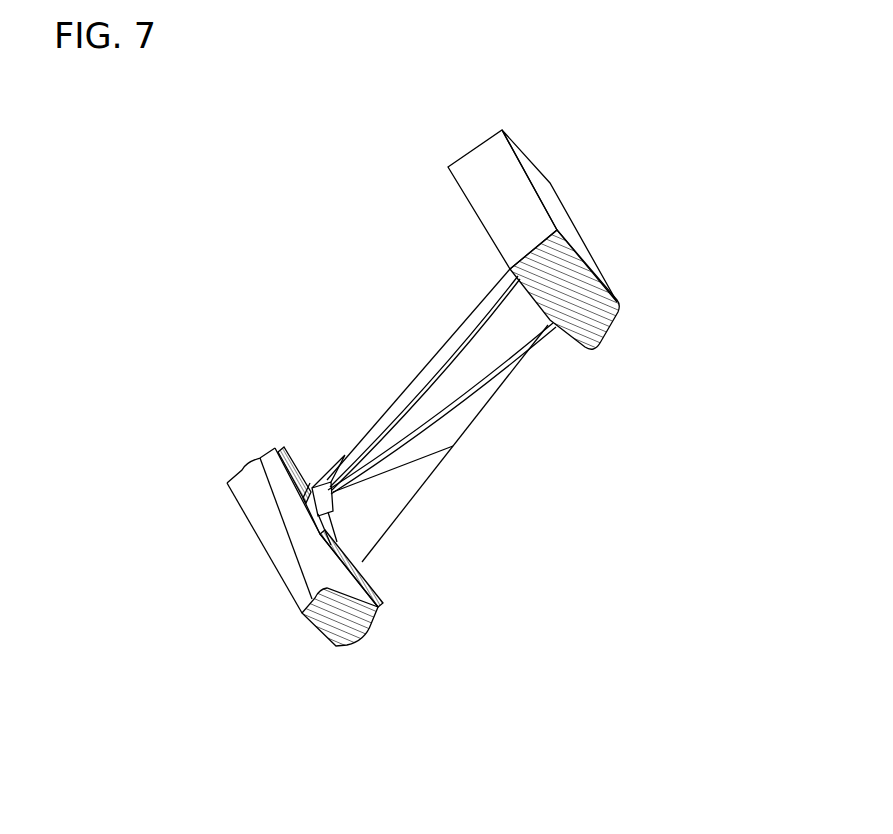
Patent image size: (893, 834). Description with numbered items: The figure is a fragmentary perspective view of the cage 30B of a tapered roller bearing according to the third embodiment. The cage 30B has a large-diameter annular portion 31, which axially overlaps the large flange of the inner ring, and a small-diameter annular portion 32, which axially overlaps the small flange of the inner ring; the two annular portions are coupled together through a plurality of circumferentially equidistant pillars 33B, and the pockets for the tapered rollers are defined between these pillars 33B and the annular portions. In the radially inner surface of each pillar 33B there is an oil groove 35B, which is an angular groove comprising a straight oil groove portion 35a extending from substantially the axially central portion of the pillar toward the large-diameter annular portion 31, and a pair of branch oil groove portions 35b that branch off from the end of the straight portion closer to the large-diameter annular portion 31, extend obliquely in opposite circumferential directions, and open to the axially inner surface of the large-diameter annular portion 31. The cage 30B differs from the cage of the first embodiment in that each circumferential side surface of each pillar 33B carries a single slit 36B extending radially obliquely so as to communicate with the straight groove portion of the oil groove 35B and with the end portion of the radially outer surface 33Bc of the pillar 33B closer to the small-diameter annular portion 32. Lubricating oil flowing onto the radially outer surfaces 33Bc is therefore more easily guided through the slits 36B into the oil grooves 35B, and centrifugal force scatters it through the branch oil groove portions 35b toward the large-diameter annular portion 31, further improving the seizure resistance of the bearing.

The cage 30B is at (437, 338).
The large-diameter annular portion 31 is at (262, 535).
The small-diameter annular portion 32 is at (512, 198).
The pillar 33B is at (417, 372).
The radially outer surface of the pillar 33Bc is at (478, 428).
The slit 36B is at (510, 358).
The oil groove 35B is at (518, 533).
The straight oil groove portion 35a is at (328, 509).
The branch oil groove portions 35b is at (322, 482).